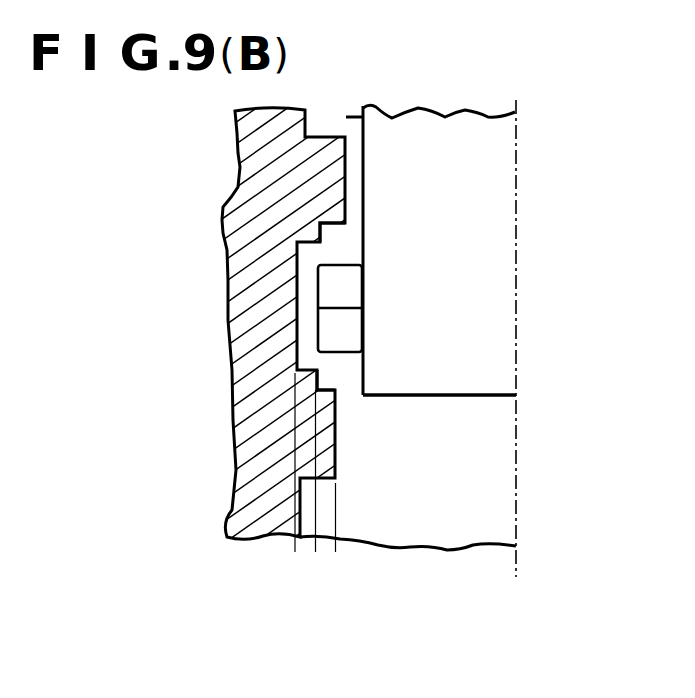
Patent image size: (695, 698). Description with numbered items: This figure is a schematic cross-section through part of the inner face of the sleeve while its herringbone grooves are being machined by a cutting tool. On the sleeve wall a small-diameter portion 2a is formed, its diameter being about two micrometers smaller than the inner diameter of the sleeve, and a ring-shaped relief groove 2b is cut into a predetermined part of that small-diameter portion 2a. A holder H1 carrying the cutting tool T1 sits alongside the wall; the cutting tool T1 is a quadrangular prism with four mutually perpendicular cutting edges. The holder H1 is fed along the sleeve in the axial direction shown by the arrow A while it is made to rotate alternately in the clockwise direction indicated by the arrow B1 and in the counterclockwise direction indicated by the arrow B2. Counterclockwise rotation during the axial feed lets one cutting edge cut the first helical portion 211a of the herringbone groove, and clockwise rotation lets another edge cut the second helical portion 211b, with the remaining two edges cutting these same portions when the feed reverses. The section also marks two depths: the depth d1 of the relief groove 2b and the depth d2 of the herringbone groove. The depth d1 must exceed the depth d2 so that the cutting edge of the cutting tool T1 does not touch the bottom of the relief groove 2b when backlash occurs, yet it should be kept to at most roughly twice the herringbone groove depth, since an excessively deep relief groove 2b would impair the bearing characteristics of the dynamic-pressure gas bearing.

The small-diameter portion 2a is at (345, 168).
The relief groove 2b is at (300, 298).
The first helical portion 211a is at (322, 239).
The second helical portion 211b is at (330, 386).
The cutting tool T1 is at (377, 280).
The holder H1 is at (447, 322).
The axial direction A is at (542, 357).
The clockwise direction B1 is at (525, 568).
The counterclockwise direction B2 is at (502, 568).
The depth of the relief groove d1 is at (335, 517).
The depth of the herringbone groove d2 is at (315, 496).